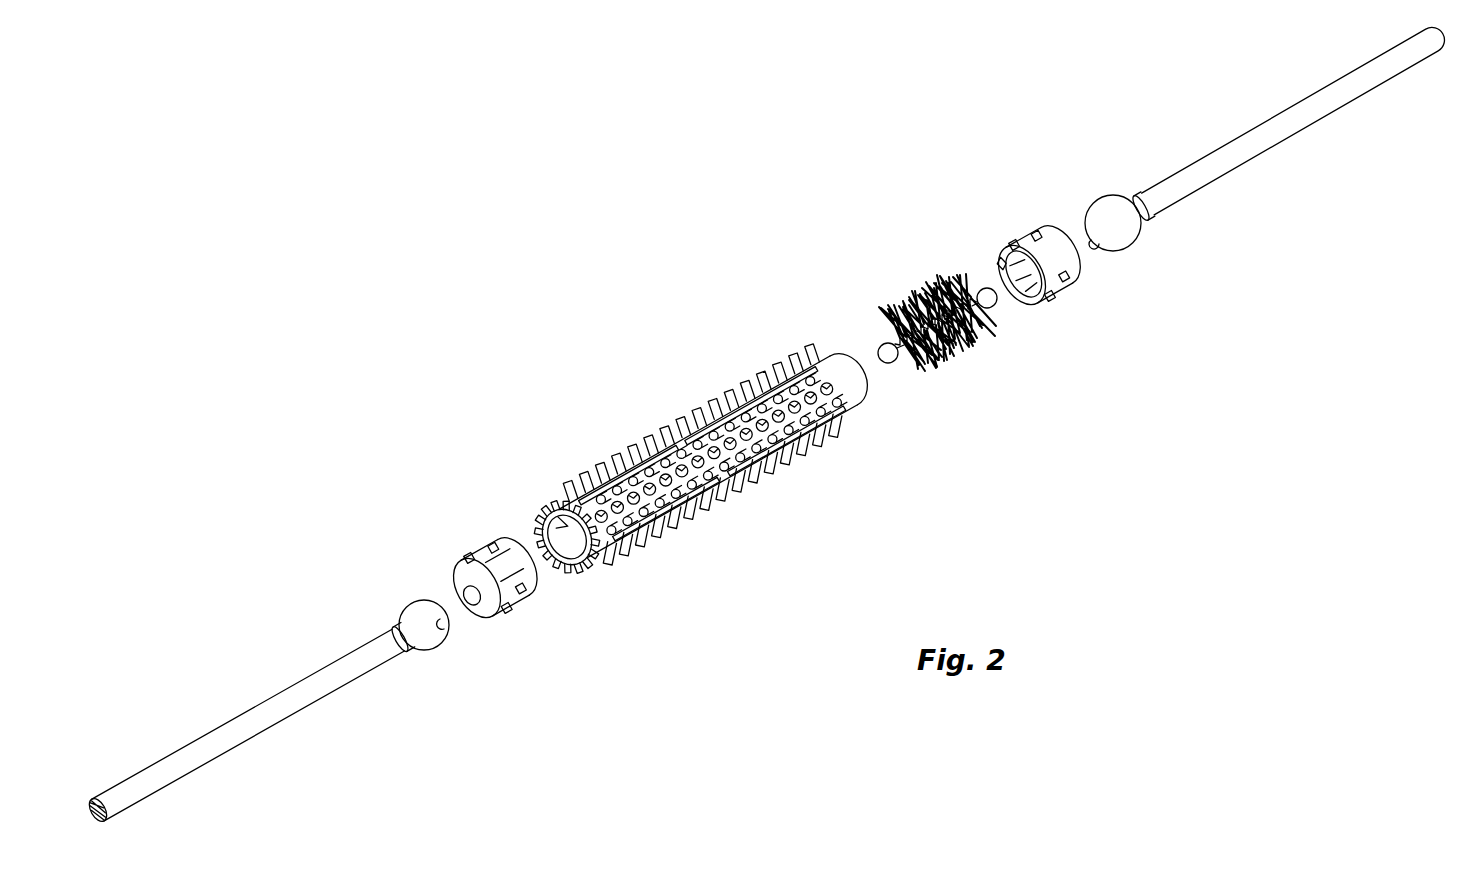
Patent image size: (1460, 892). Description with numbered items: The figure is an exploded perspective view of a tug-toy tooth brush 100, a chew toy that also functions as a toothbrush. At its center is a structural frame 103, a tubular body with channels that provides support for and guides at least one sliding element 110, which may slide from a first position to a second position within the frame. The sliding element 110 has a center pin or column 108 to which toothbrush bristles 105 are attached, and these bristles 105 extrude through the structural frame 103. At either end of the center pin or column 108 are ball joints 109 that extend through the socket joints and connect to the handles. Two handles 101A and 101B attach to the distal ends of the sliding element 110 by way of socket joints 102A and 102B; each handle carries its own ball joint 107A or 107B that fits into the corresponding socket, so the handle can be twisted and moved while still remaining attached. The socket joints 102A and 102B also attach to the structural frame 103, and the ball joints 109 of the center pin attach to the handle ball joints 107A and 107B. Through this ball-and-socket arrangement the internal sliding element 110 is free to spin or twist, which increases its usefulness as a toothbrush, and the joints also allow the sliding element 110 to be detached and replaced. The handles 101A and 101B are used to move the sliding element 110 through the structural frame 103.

The tug-toy tooth brush 100 is at (633, 242).
The handle 101A is at (253, 713).
The handle 101B is at (1297, 110).
The socket joint 102A is at (460, 570).
The socket joint 102B is at (1062, 277).
The structural frame 103 is at (685, 430).
The bristles 105 is at (910, 298).
The ball joint 107A is at (415, 608).
The ball joint 107B is at (1110, 207).
The center pin or column 108 is at (982, 310).
The ball joints 109 is at (990, 310).
The sliding element 110 is at (1101, 367).